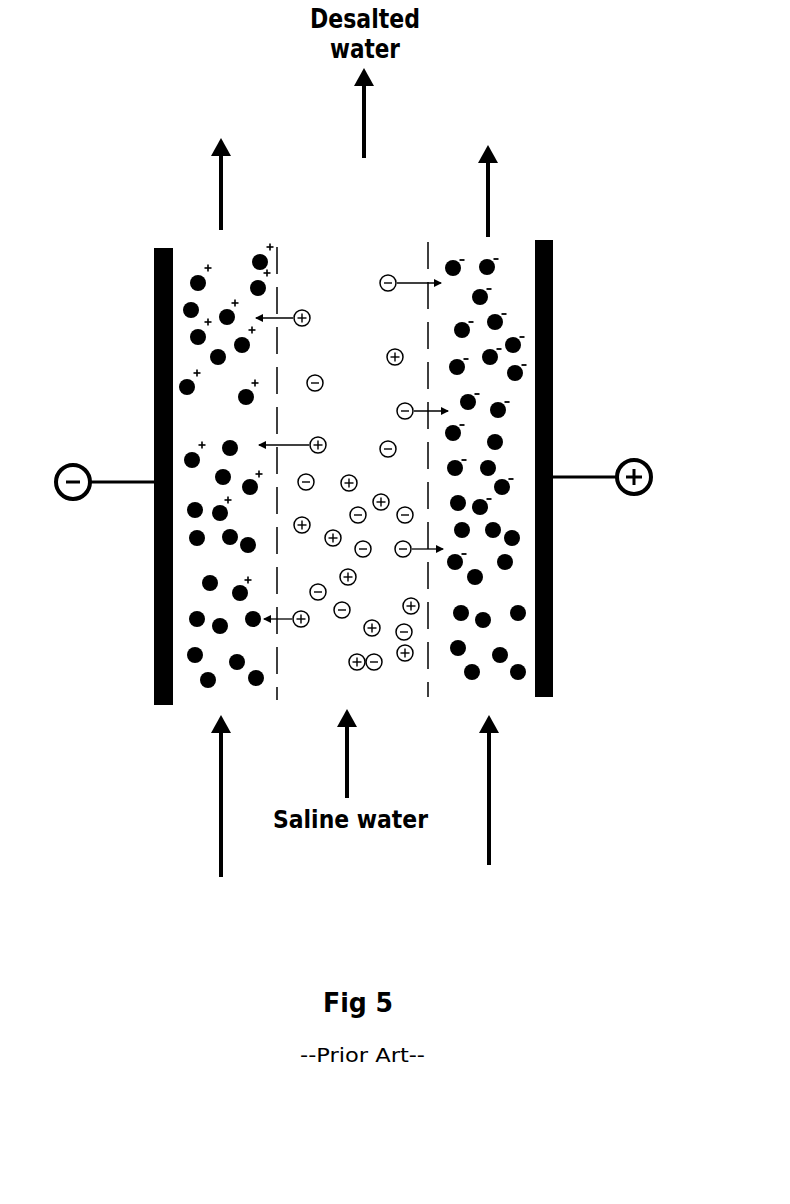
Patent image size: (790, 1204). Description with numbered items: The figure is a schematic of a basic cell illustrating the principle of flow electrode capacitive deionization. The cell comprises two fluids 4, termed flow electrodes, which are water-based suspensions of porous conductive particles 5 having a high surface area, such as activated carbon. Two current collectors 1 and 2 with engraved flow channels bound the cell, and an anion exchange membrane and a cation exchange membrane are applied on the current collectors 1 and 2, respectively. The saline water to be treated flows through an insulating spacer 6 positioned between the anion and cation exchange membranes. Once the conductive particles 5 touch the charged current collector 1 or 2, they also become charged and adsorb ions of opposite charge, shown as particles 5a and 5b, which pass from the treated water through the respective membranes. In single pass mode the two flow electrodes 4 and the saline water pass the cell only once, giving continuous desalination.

The current collector 1 is at (547, 238).
The current collector 2 is at (155, 245).
The fluid 4 is at (354, 817).
The suspended conductive particle 5 is at (257, 692).
The cation 5a is at (233, 589).
The anion 5b is at (518, 561).
The insulating spacer 6 is at (353, 439).